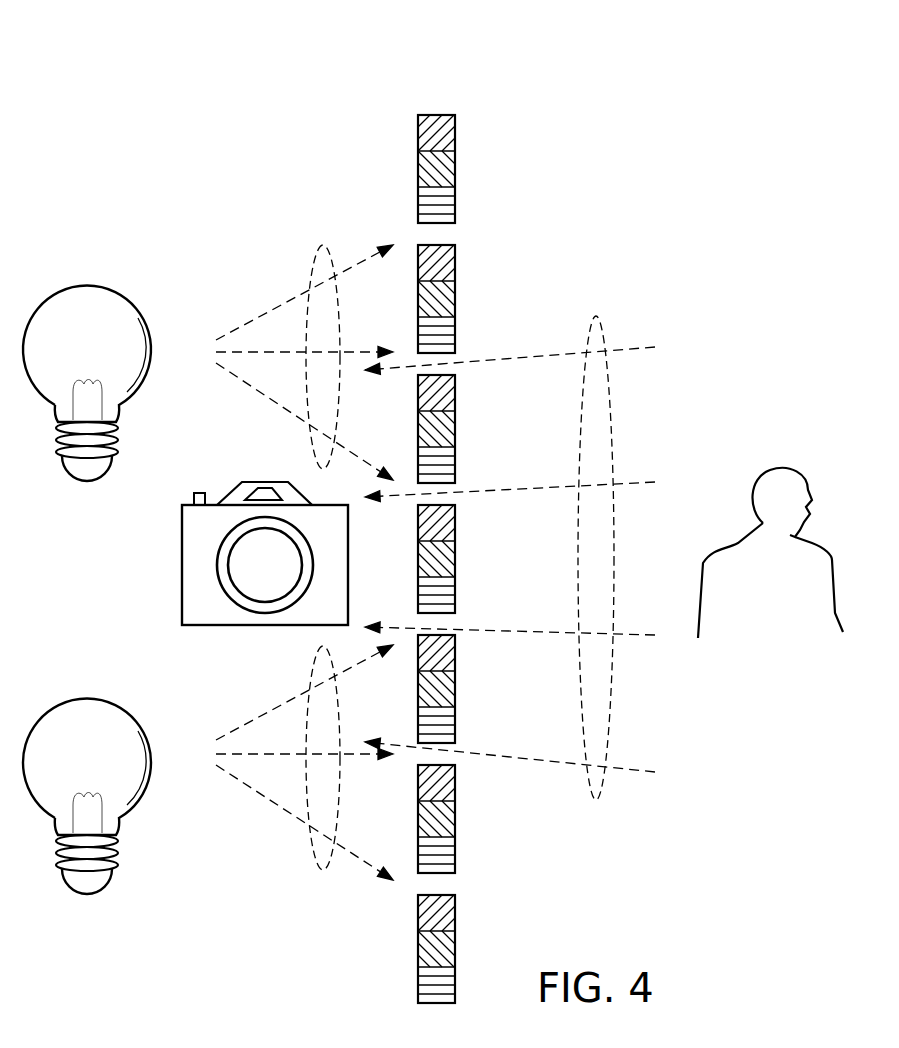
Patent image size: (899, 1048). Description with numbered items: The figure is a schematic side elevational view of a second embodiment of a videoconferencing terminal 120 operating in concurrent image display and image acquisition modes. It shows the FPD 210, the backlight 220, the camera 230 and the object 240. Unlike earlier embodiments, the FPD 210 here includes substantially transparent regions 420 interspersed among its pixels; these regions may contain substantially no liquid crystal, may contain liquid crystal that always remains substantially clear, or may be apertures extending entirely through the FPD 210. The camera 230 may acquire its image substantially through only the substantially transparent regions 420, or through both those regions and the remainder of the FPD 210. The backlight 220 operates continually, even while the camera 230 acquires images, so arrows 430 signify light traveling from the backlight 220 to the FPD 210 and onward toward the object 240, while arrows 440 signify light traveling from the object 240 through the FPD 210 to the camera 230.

The videoconferencing terminal 120 is at (272, 76).
The FPD 210 is at (452, 104).
The backlight 220 is at (85, 287).
The camera 230 is at (182, 568).
The object 240 is at (782, 470).
The substantially transparent regions 420 is at (475, 228).
The arrows 430 is at (323, 247).
The arrows 440 is at (595, 317).